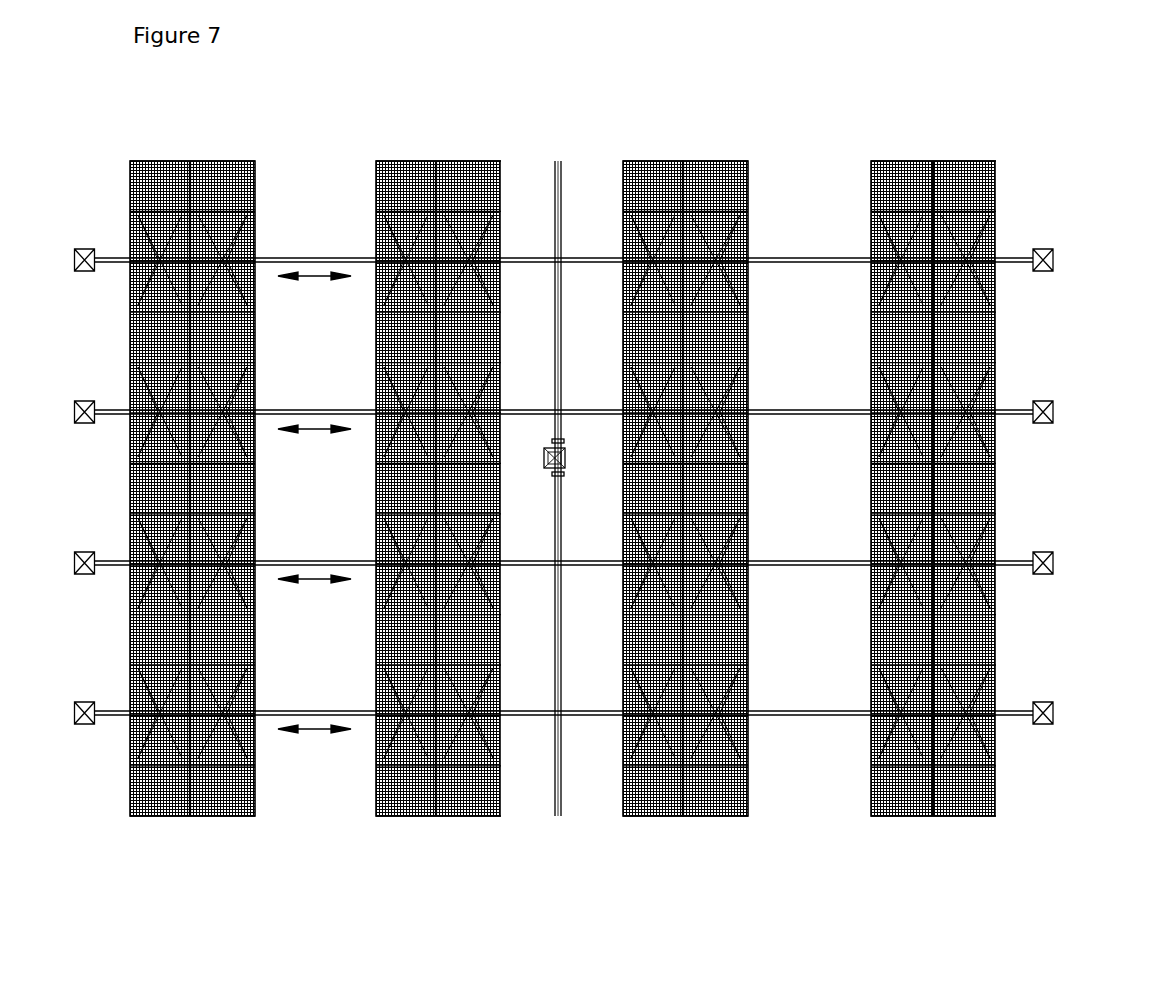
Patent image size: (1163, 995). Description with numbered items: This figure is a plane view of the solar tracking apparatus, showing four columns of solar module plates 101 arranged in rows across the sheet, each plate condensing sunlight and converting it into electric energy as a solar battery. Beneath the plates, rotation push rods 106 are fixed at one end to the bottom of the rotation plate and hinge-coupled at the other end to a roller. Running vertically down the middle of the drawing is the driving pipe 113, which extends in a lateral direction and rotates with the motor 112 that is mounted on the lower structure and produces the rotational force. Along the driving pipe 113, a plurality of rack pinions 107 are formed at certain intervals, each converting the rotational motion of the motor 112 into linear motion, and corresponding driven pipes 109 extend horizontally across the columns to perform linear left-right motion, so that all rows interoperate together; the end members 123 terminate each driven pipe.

The solar module plate 101 is at (640, 802).
The rotation push rod 106 is at (703, 762).
The rack pinion 107 is at (553, 250).
The driven pipe 109 is at (838, 708).
The motor 112 is at (537, 460).
The driving pipe 113 is at (547, 192).
The rail end support 123 is at (1045, 250).